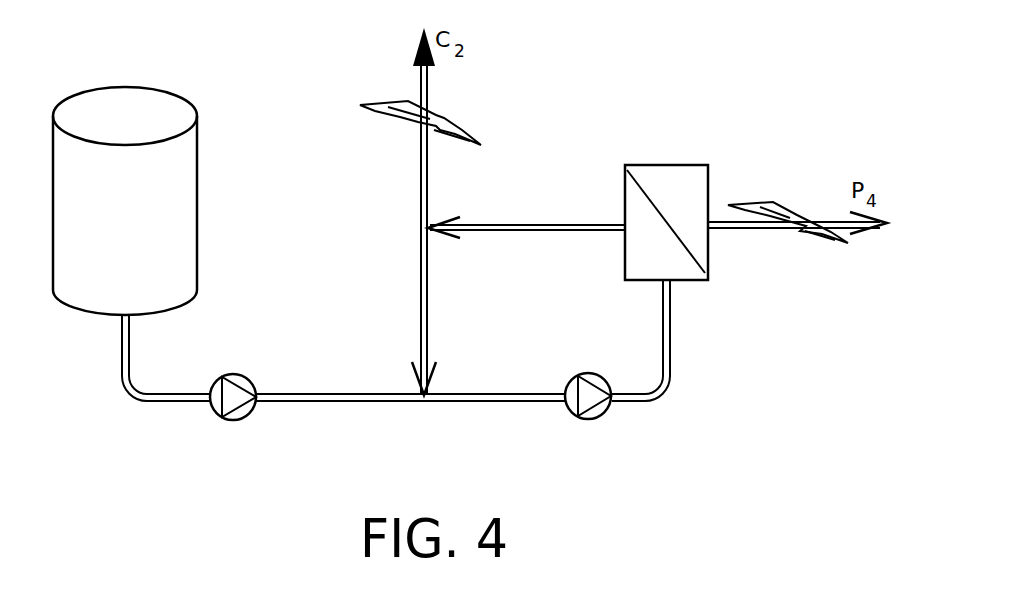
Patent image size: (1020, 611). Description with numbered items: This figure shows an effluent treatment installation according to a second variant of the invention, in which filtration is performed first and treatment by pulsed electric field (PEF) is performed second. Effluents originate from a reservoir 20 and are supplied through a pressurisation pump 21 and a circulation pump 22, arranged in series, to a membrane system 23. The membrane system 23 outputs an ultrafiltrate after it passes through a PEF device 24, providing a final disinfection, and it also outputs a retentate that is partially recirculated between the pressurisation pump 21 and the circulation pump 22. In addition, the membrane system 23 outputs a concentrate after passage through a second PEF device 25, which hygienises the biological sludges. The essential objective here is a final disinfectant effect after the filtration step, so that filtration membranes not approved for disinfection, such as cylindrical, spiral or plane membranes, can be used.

The reservoir 20 is at (194, 224).
The pressurisation pump 21 is at (247, 419).
The circulation pump 22 is at (600, 410).
The membrane system 23 is at (667, 173).
The PEF device 24 is at (768, 208).
The PEF device 25 is at (397, 113).